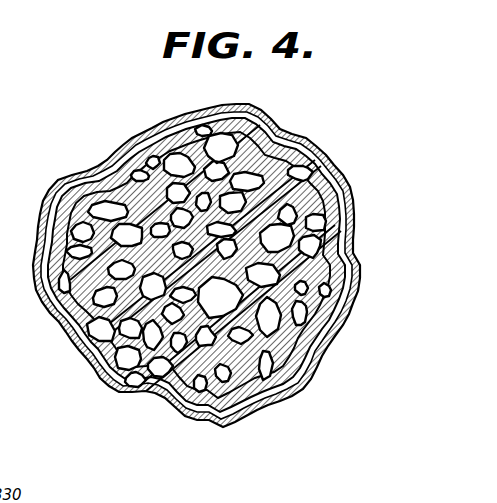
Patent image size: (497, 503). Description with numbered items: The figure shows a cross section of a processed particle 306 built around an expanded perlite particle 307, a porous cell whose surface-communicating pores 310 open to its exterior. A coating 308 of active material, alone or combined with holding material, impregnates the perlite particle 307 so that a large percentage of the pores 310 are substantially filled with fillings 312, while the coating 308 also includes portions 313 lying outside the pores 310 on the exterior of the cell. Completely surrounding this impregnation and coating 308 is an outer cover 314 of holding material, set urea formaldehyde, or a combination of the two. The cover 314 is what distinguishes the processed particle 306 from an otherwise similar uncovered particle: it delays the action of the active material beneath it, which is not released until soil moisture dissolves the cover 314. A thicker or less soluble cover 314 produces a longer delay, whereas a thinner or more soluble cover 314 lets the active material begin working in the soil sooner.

The processed particle 306 is at (312, 130).
The expanded perlite particle 307 is at (303, 277).
The coating 308 is at (137, 398).
The surface-communicating pores 310 is at (132, 162).
The fillings 312 is at (148, 153).
The portions outside of pores 313 is at (111, 389).
The outer cover 314 is at (90, 370).